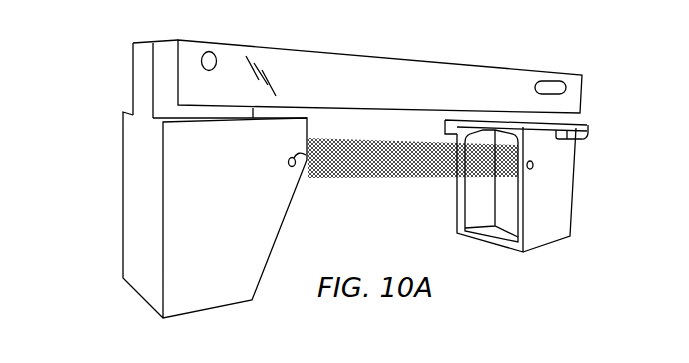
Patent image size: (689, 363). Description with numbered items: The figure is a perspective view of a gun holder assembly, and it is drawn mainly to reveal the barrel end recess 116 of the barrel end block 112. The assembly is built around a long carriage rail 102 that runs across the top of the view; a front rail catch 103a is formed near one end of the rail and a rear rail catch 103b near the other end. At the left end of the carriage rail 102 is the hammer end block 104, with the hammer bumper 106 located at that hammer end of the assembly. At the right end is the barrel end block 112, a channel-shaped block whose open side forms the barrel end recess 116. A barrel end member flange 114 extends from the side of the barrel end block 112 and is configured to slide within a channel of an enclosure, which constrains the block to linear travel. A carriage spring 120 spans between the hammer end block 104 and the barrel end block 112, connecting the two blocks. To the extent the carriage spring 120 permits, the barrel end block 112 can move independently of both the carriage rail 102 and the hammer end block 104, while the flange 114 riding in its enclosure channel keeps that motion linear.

The carriage rail 102 is at (422, 62).
The front rail catch 103a is at (207, 51).
The rear rail catch 103b is at (545, 81).
The hammer end block 104 is at (130, 212).
The hammer bumper 106 is at (145, 65).
The barrel end block 112 is at (568, 220).
The barrel end member flange 114 is at (592, 128).
The barrel end recess 116 is at (482, 208).
The carriage spring 120 is at (375, 168).